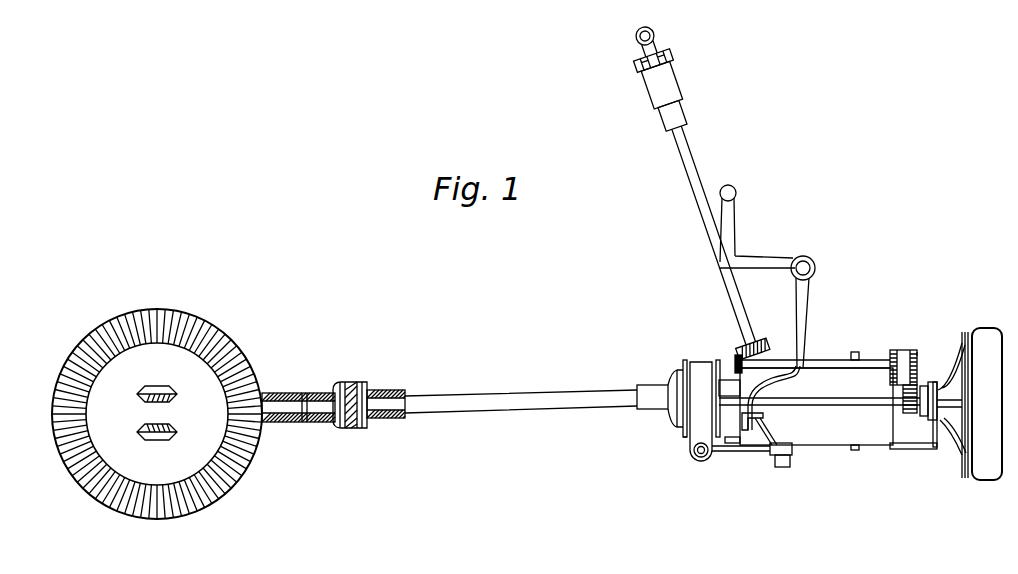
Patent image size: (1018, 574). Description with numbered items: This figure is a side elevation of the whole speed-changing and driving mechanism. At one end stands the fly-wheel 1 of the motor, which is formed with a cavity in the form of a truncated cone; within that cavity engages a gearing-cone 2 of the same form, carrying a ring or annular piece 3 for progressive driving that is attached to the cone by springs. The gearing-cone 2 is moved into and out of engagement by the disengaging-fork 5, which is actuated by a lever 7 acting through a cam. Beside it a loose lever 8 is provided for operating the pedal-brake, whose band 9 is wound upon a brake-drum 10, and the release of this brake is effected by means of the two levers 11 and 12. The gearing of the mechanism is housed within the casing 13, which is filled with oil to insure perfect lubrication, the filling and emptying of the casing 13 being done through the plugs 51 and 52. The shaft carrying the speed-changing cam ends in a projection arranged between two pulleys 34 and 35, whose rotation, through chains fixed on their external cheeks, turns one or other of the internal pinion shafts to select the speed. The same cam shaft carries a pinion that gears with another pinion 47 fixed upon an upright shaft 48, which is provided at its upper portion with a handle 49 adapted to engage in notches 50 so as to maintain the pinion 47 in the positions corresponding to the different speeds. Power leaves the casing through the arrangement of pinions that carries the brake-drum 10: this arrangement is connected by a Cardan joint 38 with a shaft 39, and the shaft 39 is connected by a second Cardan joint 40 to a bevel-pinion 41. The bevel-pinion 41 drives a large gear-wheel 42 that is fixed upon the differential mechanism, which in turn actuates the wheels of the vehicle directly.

The fly-wheel 1 is at (987, 404).
The gearing-cone 2 is at (943, 399).
The ring or annular piece 3 is at (957, 480).
The disengaging-fork 5 is at (913, 453).
The lever 7 is at (767, 438).
The loose lever 8 is at (741, 459).
The band 9 is at (701, 410).
The brake-drum 10 is at (677, 440).
The lever 11 is at (788, 343).
The lever 12 is at (757, 226).
The casing 13 is at (819, 402).
The pulley 34 is at (920, 312).
The pulley 35 is at (925, 357).
The Cardan joint 38 is at (660, 398).
The shaft 39 is at (521, 392).
The second Cardan joint 40 is at (369, 396).
The bevel-pinion 41 is at (288, 393).
The gear-wheel 42 is at (157, 414).
The pinion 47 is at (763, 355).
The shaft 48 is at (737, 320).
The eye 49 is at (658, 49).
The notches 50 is at (636, 68).
The plug 51 is at (856, 348).
The plug 52 is at (851, 457).